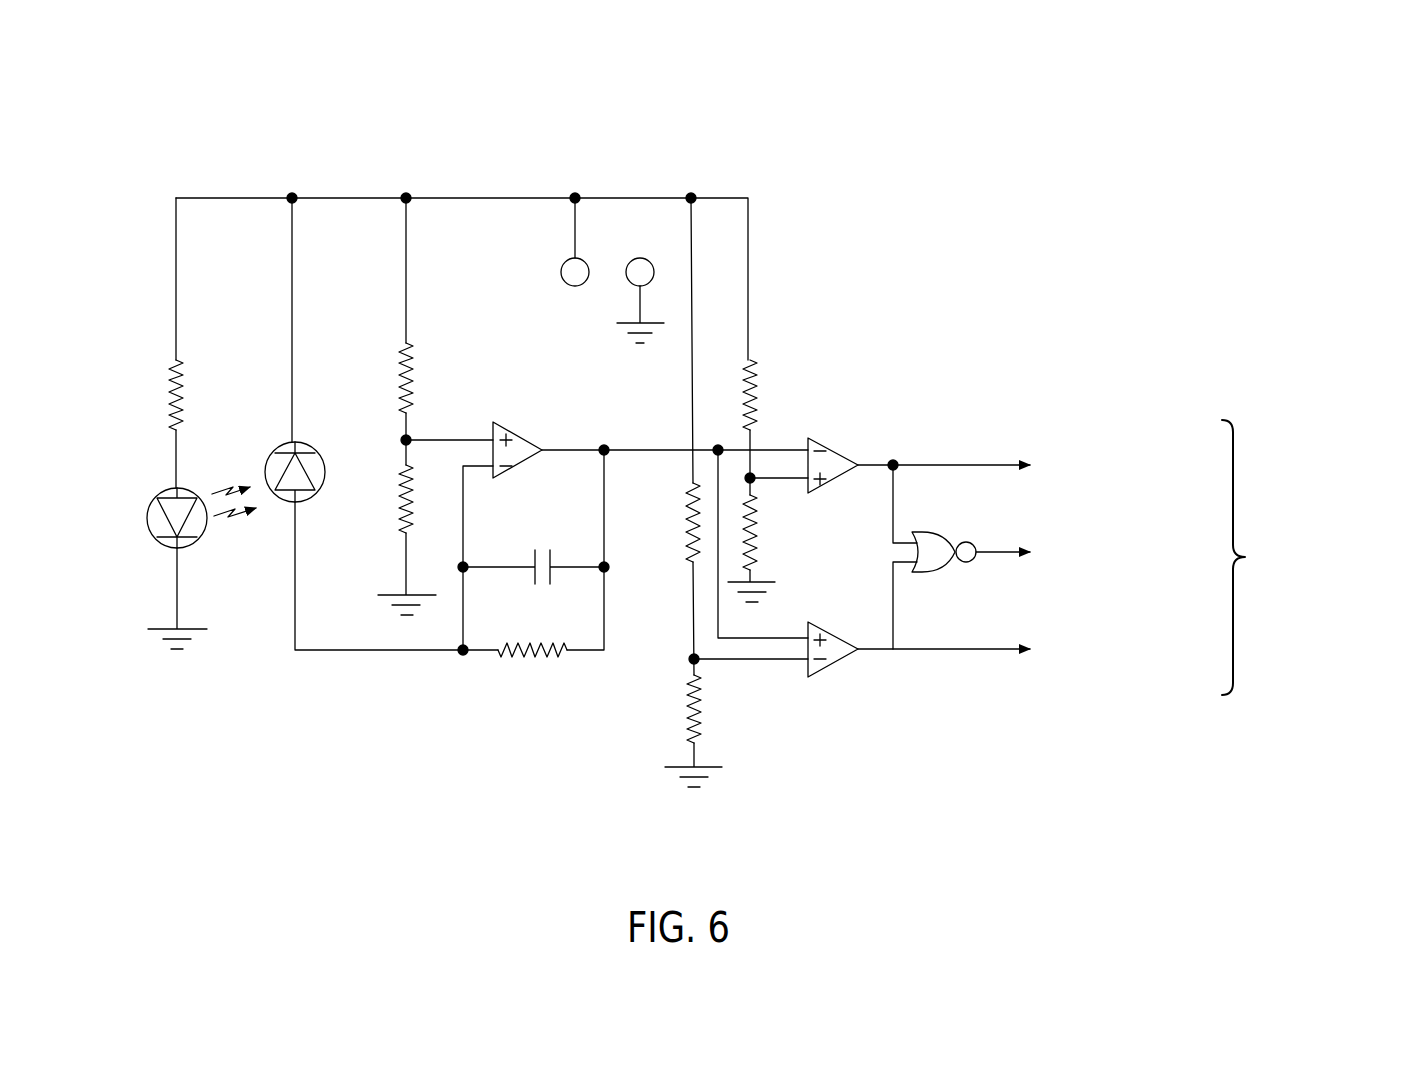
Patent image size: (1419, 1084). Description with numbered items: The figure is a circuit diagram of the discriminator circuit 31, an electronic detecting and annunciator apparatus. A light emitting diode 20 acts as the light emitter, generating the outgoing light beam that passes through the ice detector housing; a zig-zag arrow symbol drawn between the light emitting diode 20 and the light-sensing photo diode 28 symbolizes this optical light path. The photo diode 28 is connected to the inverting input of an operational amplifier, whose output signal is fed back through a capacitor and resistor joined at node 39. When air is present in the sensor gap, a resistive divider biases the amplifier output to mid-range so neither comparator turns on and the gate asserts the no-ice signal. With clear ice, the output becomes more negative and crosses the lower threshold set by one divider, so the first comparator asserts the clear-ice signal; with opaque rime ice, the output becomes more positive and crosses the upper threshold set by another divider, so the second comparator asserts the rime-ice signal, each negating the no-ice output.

The light emitting diode 20 is at (150, 510).
The light-sensing photo diode 28 is at (309, 452).
The discriminator circuit 31 is at (874, 226).
The summing node 39 is at (462, 666).